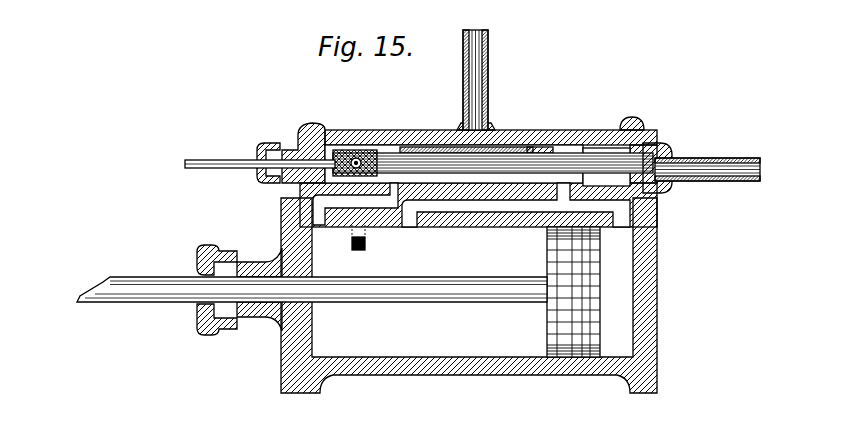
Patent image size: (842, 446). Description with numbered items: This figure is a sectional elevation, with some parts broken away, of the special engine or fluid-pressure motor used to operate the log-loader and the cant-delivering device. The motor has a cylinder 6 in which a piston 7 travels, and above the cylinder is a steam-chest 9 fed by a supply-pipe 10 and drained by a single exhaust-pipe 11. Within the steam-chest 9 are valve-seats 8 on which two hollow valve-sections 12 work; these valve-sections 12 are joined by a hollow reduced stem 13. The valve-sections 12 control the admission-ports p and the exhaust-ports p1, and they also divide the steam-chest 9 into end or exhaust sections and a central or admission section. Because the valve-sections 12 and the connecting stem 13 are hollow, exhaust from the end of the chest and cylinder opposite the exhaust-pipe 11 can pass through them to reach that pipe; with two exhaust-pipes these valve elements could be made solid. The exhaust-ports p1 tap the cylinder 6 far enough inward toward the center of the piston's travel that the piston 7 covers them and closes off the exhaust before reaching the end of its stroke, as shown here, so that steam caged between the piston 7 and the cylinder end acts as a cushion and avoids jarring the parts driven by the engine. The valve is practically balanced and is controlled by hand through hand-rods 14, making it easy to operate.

The cylinder 6 is at (514, 365).
The piston 7 is at (556, 252).
The valve-seats 8 is at (394, 218).
The steam-chest 9 is at (607, 157).
The supply-pipe 10 is at (481, 88).
The exhaust-pipe 11 is at (700, 168).
The valve-sections 12 is at (372, 150).
The reduced stem 13 is at (503, 153).
The hand-rods 14 is at (223, 157).
The admission-ports p is at (418, 185).
The exhaust-ports p1 is at (352, 244).